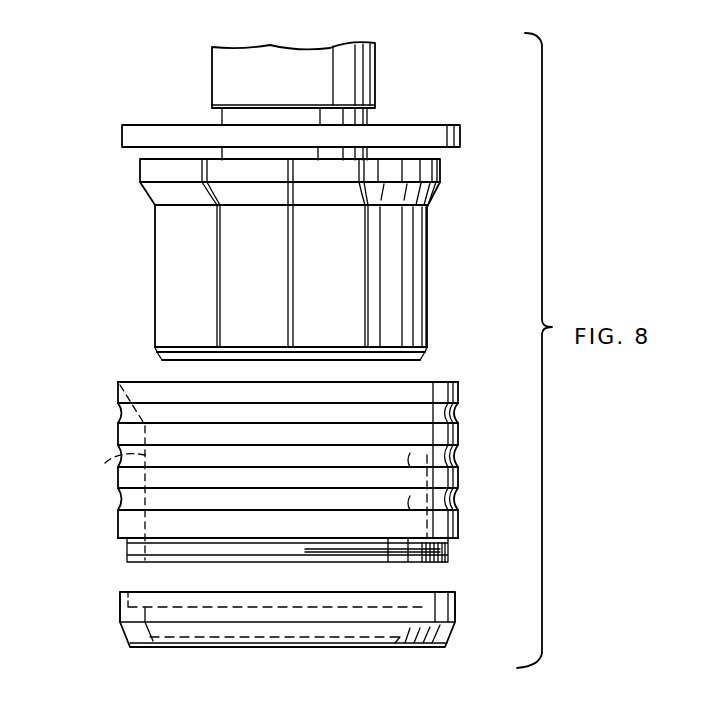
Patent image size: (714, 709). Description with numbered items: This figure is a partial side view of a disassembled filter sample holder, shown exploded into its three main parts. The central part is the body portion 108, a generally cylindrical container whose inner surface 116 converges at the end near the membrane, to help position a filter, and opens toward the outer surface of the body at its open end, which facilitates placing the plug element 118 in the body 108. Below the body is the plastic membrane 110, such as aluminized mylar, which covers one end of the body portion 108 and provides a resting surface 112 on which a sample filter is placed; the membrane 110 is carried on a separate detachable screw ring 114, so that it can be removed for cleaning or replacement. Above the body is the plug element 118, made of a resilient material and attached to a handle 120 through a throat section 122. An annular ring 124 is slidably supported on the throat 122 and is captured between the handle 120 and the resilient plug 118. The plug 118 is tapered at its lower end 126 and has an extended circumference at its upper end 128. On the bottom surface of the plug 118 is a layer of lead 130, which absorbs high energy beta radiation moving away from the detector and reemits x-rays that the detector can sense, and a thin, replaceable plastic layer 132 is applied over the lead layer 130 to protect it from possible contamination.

The body portion 108 is at (442, 438).
The plastic membrane 110 is at (175, 647).
The resting surface 112 is at (458, 618).
The screw ring 114 is at (120, 608).
The inner surface 116 is at (105, 463).
The plug element 118 is at (408, 270).
The handle 120 is at (360, 74).
The throat section 122 is at (368, 121).
The annular ring 124 is at (460, 140).
The lower end 126 is at (420, 360).
The upper end 128 is at (437, 173).
The layer of lead 130 is at (158, 351).
The replaceable plastic layer 132 is at (160, 360).